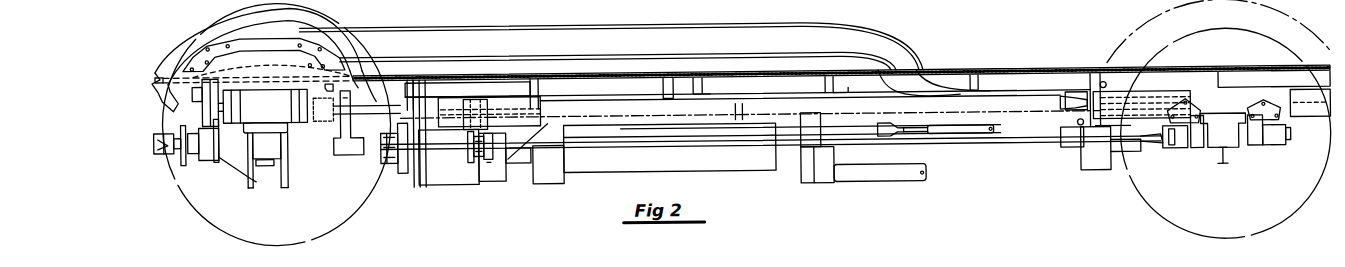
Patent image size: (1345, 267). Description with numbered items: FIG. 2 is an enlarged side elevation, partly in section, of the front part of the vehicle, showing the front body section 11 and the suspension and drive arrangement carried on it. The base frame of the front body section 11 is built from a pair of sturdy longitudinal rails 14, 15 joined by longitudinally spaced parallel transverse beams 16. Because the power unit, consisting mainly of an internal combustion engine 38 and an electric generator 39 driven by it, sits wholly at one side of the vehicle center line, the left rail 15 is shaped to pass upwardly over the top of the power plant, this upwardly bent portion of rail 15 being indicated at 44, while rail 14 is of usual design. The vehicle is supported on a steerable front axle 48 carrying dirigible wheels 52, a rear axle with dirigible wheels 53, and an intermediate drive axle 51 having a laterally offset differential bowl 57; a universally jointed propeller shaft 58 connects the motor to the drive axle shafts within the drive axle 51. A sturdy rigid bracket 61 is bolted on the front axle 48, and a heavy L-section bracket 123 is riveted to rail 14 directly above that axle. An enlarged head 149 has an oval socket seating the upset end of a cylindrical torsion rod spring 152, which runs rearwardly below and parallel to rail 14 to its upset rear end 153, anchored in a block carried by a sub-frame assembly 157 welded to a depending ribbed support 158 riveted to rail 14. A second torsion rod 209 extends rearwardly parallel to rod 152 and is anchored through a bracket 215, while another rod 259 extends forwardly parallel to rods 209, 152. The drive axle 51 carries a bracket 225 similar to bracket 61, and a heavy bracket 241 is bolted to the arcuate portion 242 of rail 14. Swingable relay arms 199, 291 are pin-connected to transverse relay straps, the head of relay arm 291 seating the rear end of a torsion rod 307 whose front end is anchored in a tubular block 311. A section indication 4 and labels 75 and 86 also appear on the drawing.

The section line 4 is at (453, 70).
The front body section 11 is at (1041, 77).
The longitudinal rail 14 is at (1287, 129).
The longitudinal rail 15 is at (1310, 108).
The transverse beams 16 is at (1087, 92).
The internal combustion engine 38 is at (772, 178).
The electric generator 39 is at (547, 181).
The upwardly bent portion of rail 44 is at (908, 46).
The front axle 48 is at (1222, 177).
The intermediate drive axle 51 is at (262, 152).
The dirigible wheels 52 is at (1297, 220).
The dirigible wheels 53 is at (334, 226).
The differential bowl 57 is at (293, 172).
The propeller shaft 58 is at (166, 153).
The bracket 61 is at (1235, 157).
The bearing plate 75 is at (1197, 160).
The hub 86 is at (1262, 155).
The bracket 123 is at (1250, 119).
The enlarged head 149 is at (1170, 160).
The torsion rod spring 152 is at (636, 148).
The upset rear end of rod 153 is at (493, 150).
The sub-frame assembly 157 is at (472, 158).
The depending ribbed support 158 is at (487, 120).
The second swingable relay arm 199 is at (1087, 157).
The rod 209 is at (448, 150).
The bracket 215 is at (396, 176).
The bracket 225 is at (287, 117).
The bracket 241 is at (246, 42).
The arcuate portion of frame rail 242 is at (172, 62).
The rod 259 is at (360, 76).
The second relay arm 291 is at (348, 165).
The torsion rod 307 is at (733, 120).
The tubular block 311 is at (1167, 112).